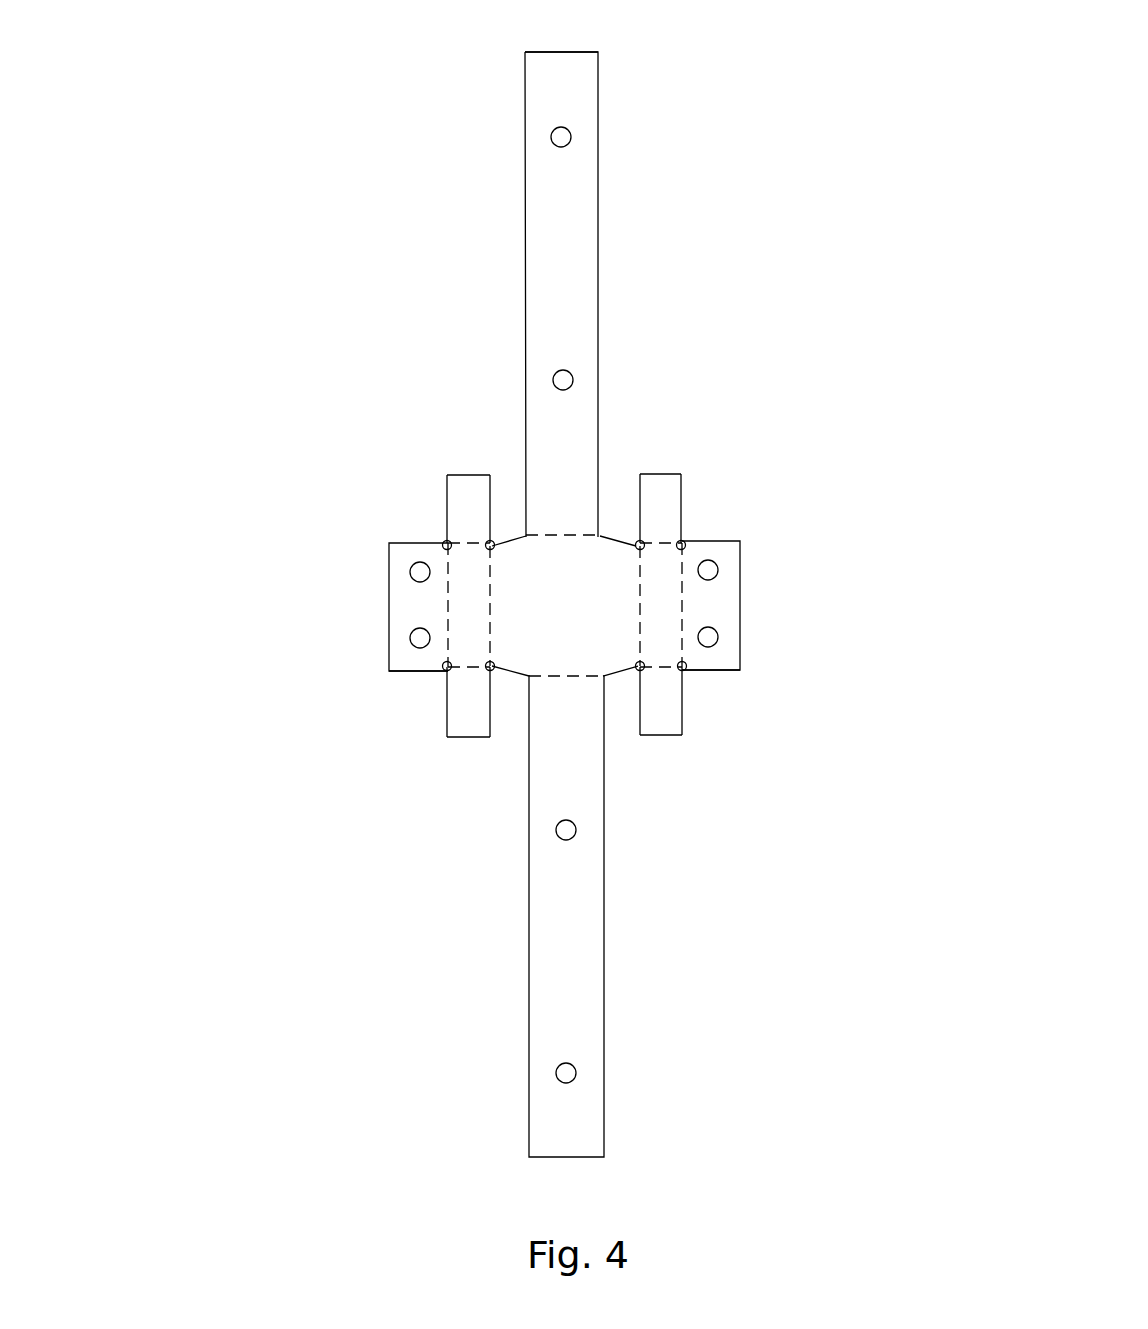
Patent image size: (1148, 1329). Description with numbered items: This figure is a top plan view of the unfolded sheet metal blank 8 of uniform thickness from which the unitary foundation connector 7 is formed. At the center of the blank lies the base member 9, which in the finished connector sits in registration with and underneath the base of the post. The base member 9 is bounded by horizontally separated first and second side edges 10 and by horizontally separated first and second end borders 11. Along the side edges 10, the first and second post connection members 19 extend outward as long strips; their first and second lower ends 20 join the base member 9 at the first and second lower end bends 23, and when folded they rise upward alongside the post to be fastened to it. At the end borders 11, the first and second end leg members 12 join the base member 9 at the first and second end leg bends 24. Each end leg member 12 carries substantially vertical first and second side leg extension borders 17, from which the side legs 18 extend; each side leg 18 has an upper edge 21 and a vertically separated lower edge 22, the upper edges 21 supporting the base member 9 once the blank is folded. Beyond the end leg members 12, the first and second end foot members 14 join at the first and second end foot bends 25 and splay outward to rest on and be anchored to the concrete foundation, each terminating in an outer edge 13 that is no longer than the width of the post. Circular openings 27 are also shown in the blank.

The unitary foundation connector 7 is at (556, 593).
The sheet metal blank 8 is at (600, 88).
The base member 9 is at (563, 640).
The first and second side edges 10 is at (512, 535).
The first and second end borders 11 is at (485, 640).
The first and second end leg members 12 is at (556, 605).
The outer edge 13 is at (389, 618).
The first and second end foot members 14 is at (389, 657).
The first and second side leg extension borders 17 is at (449, 542).
The side legs 18 is at (559, 612).
The first and second post connection members 19 is at (600, 260).
The first and second lower ends 20 is at (539, 528).
The upper edges 21 is at (466, 472).
The lower edges 22 is at (447, 488).
The first and second lower end bends 23 is at (586, 532).
The first and second end leg bends 24 is at (480, 585).
The first and second end foot bends 25 is at (448, 645).
The hole 27 is at (552, 138).